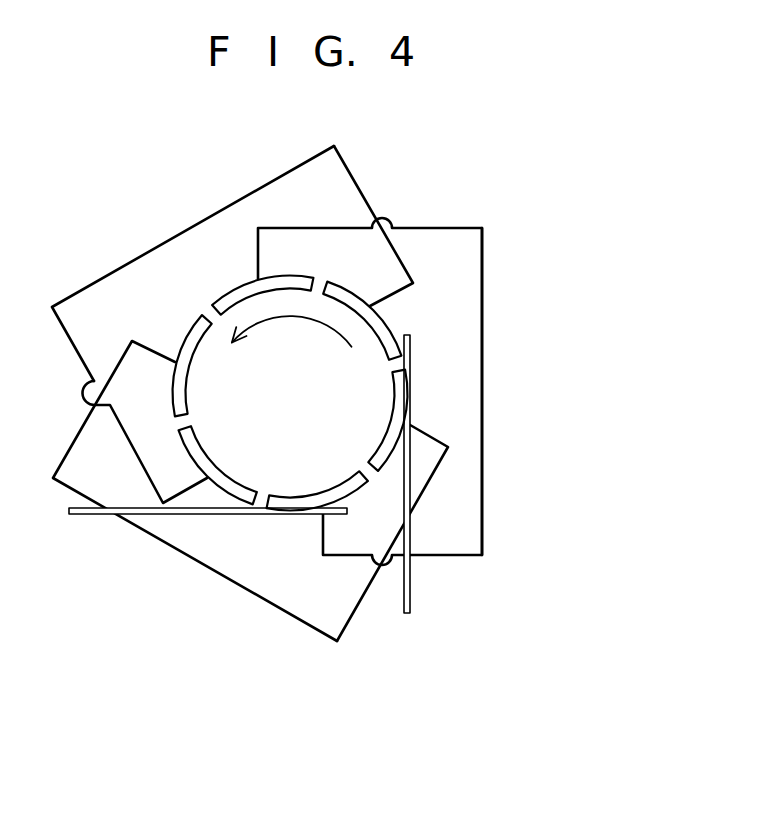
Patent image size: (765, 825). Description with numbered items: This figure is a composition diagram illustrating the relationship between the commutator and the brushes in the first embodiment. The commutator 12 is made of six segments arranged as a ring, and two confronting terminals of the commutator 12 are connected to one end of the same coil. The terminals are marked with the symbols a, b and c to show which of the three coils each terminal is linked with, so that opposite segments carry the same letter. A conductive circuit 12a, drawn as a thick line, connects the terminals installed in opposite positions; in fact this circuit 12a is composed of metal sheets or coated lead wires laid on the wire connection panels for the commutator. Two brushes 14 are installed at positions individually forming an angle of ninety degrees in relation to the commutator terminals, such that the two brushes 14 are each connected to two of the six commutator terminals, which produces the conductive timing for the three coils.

The commutator 12 is at (408, 317).
The conductive circuit 12a is at (484, 396).
The brushes 14 is at (80, 513).
The terminal linked with coil A a is at (290, 393).
The terminal linked with coil B b is at (290, 393).
The terminal linked with coil C c is at (290, 393).